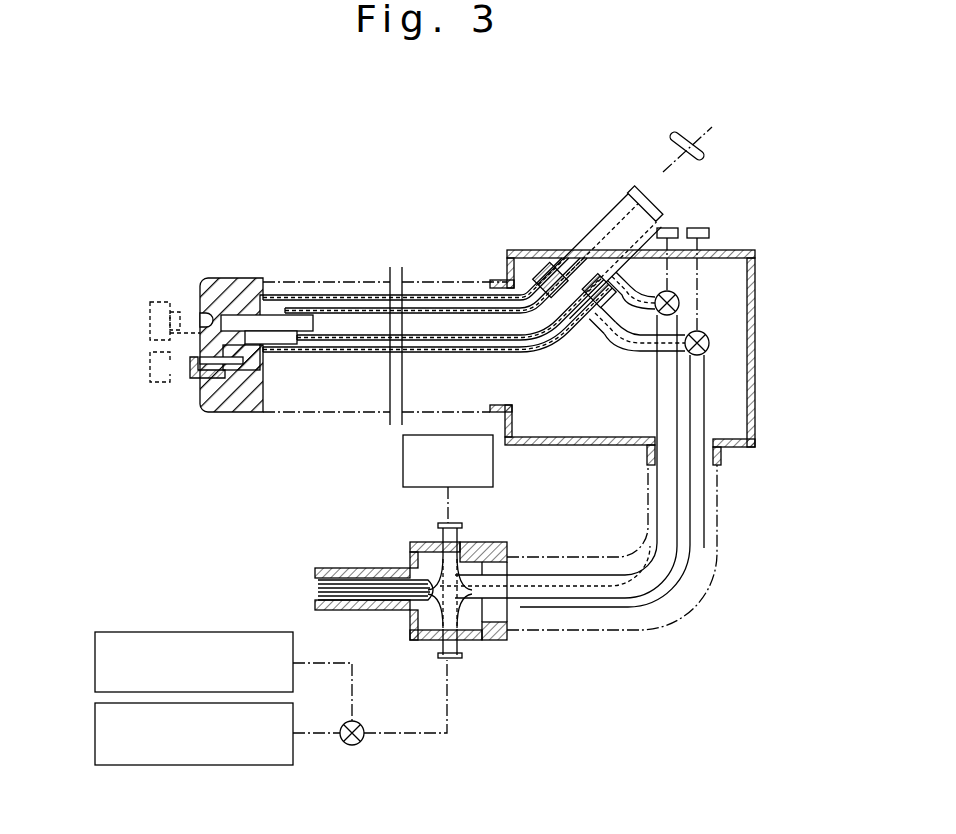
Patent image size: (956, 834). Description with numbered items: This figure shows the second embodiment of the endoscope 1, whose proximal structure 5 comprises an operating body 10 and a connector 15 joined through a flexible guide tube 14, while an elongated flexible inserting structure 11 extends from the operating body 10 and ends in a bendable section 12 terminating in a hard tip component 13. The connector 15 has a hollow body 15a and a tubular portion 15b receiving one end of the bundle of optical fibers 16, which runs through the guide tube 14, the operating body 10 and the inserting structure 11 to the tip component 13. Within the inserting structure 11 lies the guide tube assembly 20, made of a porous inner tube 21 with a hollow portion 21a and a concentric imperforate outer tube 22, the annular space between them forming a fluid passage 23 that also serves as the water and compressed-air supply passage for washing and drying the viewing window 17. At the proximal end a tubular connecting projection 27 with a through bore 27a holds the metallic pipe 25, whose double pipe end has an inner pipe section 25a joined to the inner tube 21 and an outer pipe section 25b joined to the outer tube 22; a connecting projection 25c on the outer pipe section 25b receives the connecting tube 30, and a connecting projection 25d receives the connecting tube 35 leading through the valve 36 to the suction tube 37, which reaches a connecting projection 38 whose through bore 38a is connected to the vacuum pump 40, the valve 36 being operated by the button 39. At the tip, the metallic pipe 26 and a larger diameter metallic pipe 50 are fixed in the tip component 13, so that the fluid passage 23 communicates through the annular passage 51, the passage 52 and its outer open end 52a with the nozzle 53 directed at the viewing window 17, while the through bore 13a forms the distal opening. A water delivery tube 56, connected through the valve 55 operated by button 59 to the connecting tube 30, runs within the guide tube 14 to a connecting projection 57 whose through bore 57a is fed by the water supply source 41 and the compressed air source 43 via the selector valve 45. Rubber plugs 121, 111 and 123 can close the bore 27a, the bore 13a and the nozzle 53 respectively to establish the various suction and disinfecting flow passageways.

The endoscope 1 is at (776, 213).
The proximal structure 5 is at (726, 512).
The operating body 10 is at (735, 252).
The inserting structure 11 is at (443, 282).
The bendable section 12 is at (333, 281).
The tip component 13 is at (238, 282).
The through bore 13a is at (206, 316).
The guide tube 14 is at (720, 548).
The connector 15 is at (416, 547).
The hollow body 15a is at (492, 548).
The tubular portion 15b is at (350, 570).
The bundle of optical fibers 16 is at (317, 589).
The viewing window 17 is at (150, 330).
The guide tube assembly 20 is at (417, 293).
The inner tube 21 is at (338, 352).
The hollow portion 21a is at (452, 334).
The outer tube 22 is at (418, 341).
The annular fluid passage 23 is at (462, 353).
The metallic pipe 25 is at (560, 257).
The inner pipe section 25a is at (556, 268).
The outer pipe section 25b is at (547, 270).
The tubular connecting projection 25c is at (590, 304).
The tubular connecting projection 25d is at (602, 328).
The metallic pipe 26 is at (300, 308).
The tubular connecting projection 27 is at (618, 220).
The through bore 27a is at (635, 203).
The connecting tube 30 is at (642, 357).
The connecting tube 35 is at (645, 284).
The valve 36 is at (680, 303).
The suction tube 37 is at (660, 490).
The tubular connecting projection 38 is at (445, 526).
The through bore 38a is at (458, 525).
The operating button 39 is at (667, 228).
The vacuum pump 40 is at (403, 465).
The water supply source 41 is at (200, 631).
The compressed air source 43 is at (182, 766).
The selector valve 45 is at (362, 741).
The larger diameter metallic pipe 50 is at (267, 295).
The annular passage 51 is at (265, 345).
The passage 52 is at (228, 368).
The outer open end 52a is at (214, 380).
The nozzle 53 is at (193, 378).
The valve 55 is at (710, 343).
The water delivery tube 56 is at (700, 400).
The connecting projection 57 is at (460, 648).
The through bore 57a is at (455, 659).
The operating button 59 is at (700, 228).
The rubber plug 111 is at (158, 302).
The rubber plug 121 is at (713, 138).
The rubber plug 123 is at (150, 370).